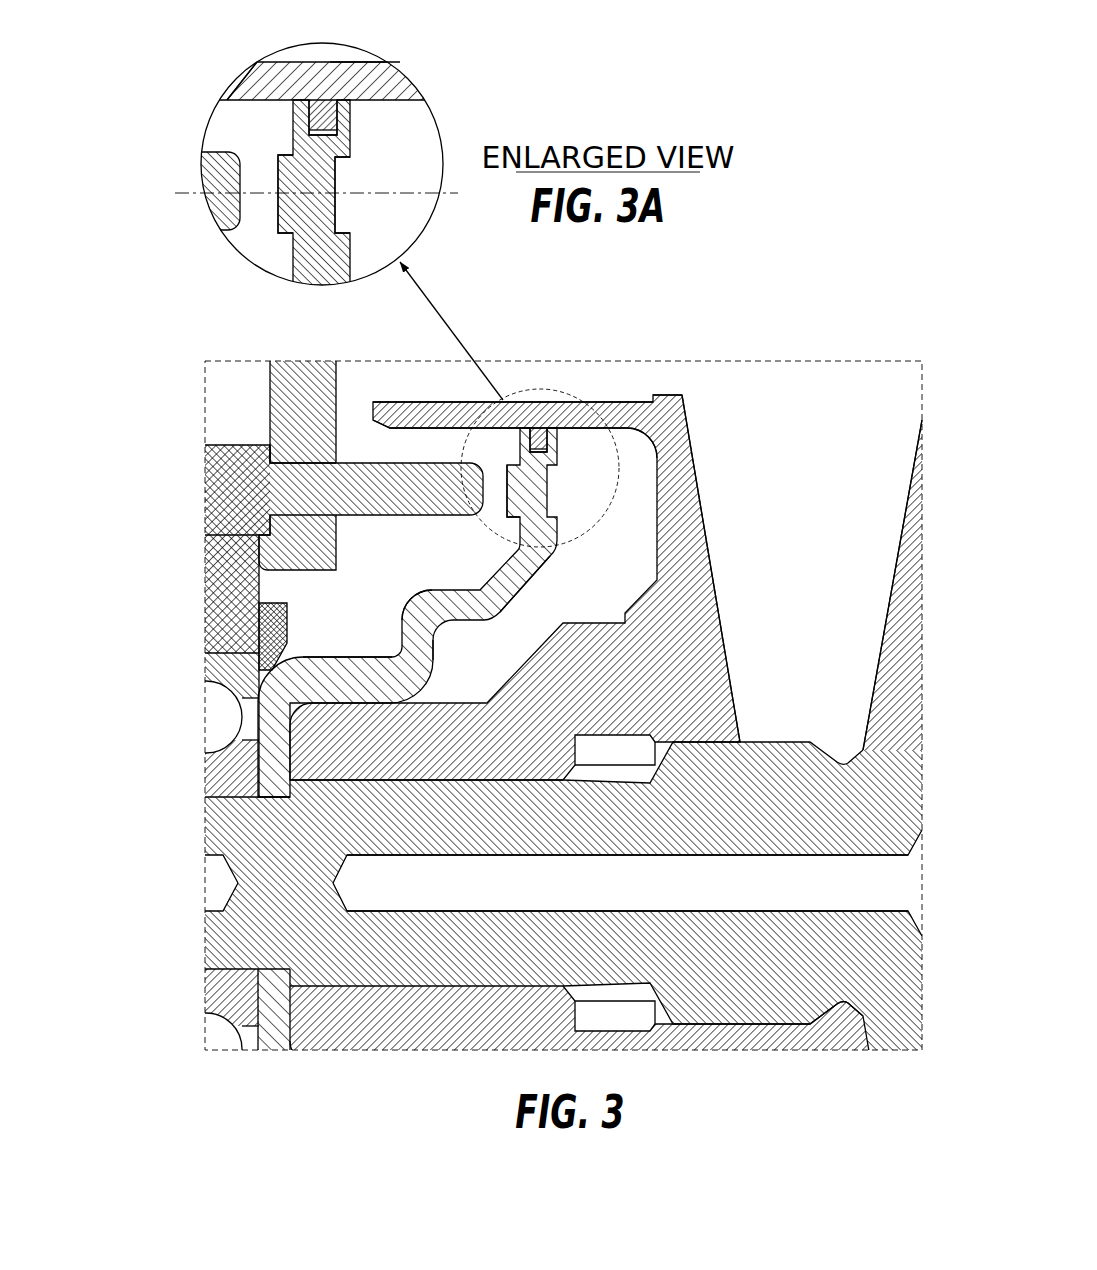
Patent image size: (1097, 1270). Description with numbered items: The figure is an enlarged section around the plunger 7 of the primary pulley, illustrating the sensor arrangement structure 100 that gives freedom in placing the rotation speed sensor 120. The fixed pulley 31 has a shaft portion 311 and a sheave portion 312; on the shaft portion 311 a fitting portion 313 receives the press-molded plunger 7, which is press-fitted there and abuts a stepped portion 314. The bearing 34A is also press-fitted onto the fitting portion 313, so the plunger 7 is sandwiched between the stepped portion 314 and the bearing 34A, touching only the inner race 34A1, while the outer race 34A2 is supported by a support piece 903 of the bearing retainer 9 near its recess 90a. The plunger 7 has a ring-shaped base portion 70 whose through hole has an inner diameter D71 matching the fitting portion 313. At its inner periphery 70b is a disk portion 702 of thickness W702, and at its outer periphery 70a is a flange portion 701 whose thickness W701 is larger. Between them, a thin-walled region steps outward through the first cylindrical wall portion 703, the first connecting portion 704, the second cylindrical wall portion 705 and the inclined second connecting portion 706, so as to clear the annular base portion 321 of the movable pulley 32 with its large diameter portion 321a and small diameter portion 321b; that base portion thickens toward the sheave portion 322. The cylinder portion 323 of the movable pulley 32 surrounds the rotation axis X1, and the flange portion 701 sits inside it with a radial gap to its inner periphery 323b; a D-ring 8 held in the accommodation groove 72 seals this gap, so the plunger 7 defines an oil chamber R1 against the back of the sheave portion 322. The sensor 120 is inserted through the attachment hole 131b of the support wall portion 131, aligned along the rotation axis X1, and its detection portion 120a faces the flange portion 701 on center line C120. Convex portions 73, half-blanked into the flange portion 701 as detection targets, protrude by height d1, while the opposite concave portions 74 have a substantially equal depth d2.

In FIG. 3, the sensor arrangement structure 100 is at (149, 364).
In FIG. 3, the plunger 7 is at (400, 586).
In FIG. 3, the D-ring 8 is at (521, 440).
In FIG. 3A, the D-ring 8 is at (330, 118).
In FIG. 3, the bearing retainer 9 is at (252, 606).
In FIG. 3, the support piece 903 is at (257, 637).
In FIG. 3, the seal recess 90a is at (272, 606).
In FIG. 3, the fixed pulley 31 is at (907, 464).
In FIG. 3, the shaft portion 311 is at (667, 823).
In FIG. 3, the sheave portion 312 is at (900, 553).
In FIG. 3, the fitting portion 313 is at (205, 945).
In FIG. 3, the stepped portion 314 is at (289, 962).
In FIG. 3, the movable pulley 32 is at (683, 392).
In FIG. 3, the annular base portion 321 is at (490, 815).
In FIG. 3, the large diameter portion 321a is at (633, 780).
In FIG. 3, the small diameter portion 321b is at (402, 790).
In FIG. 3, the sheave portion 322 is at (700, 548).
In FIG. 3, the cylinder portion 323 is at (447, 402).
In FIG. 3A, the cylinder portion 323 is at (412, 86).
In FIG. 3A, the inner periphery 323b is at (236, 82).
In FIG. 3, the bearing 34A is at (124, 640).
In FIG. 3, the inner race 34A1 is at (214, 745).
In FIG. 3, the outer race 34A2 is at (206, 657).
In FIG. 3, the base portion 70 is at (592, 755).
In FIG. 3, the outer periphery 70a is at (589, 401).
In FIG. 3A, the outer periphery 70a is at (366, 62).
In FIG. 3, the inner periphery 70b is at (266, 800).
In FIG. 3, the flange portion 701 is at (560, 500).
In FIG. 3A, the flange portion 701 is at (325, 178).
In FIG. 3, the disk portion 702 is at (292, 765).
In FIG. 3, the first cylindrical wall portion 703 is at (355, 676).
In FIG. 3, the first connecting portion 704 is at (400, 637).
In FIG. 3, the second cylindrical wall portion 705 is at (456, 621).
In FIG. 3, the second connecting portion 706 is at (505, 612).
In FIG. 3, the accommodation groove 72 is at (558, 450).
In FIG. 3A, the accommodation groove 72 is at (345, 128).
In FIG. 3, the convex portion 73 is at (516, 538).
In FIG. 3A, the convex portion 73 is at (285, 232).
In FIG. 3A, the concave portion 74 is at (345, 212).
In FIG. 3, the sensor 120 is at (203, 456).
In FIG. 3, the detection portion 120a is at (458, 476).
In FIG. 3A, the detection portion 120a is at (225, 180).
In FIG. 3, the support wall portion 131 is at (268, 396).
In FIG. 3, the attachment hole 131b is at (263, 461).
In FIG. 3, the center line C120 is at (600, 489).
In FIG. 3, the rotation axis X1 is at (945, 883).
In FIG. 3, the inner diameter D71 is at (205, 967).
In FIG. 3, the thickness of the flange portion W701 is at (557, 428).
In FIG. 3, the thickness of the disk portion W702 is at (258, 797).
In FIG. 3, the oil chamber R1 is at (608, 579).
In FIG. 3A, the protrusion height d1 is at (278, 283).
In FIG. 3A, the depth d2 is at (335, 283).